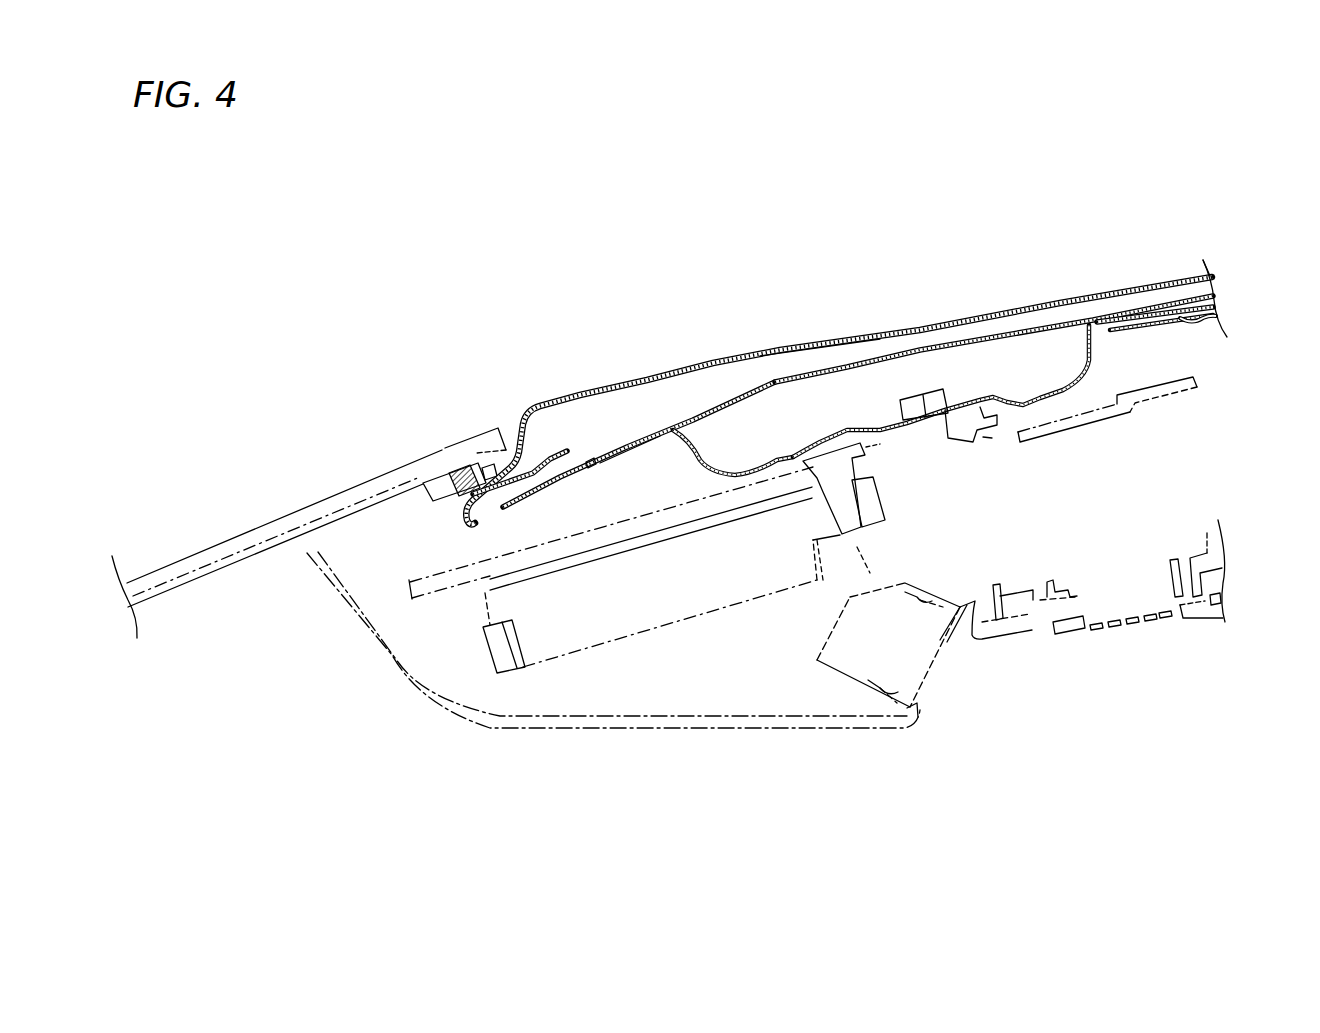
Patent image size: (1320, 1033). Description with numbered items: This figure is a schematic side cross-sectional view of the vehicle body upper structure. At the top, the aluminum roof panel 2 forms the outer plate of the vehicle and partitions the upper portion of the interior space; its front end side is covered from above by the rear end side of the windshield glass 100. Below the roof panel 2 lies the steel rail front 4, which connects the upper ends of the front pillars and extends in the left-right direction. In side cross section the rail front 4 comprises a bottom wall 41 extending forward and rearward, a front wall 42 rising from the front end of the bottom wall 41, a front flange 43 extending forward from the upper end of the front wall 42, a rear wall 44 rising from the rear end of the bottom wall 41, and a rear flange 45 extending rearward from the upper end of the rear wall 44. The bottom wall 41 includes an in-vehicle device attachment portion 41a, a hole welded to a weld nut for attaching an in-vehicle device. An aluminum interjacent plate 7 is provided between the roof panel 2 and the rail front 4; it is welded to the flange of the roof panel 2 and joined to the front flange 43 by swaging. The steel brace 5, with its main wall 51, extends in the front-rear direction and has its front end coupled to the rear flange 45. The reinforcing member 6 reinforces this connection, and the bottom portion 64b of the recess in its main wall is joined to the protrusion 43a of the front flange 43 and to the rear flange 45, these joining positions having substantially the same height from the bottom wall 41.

The windshield glass 100 is at (298, 508).
The roof panel 2 is at (920, 328).
The bottom portion 64b is at (838, 354).
The reinforcing member 6 is at (1058, 327).
The main wall 51 is at (1138, 295).
The brace 5 is at (1198, 277).
The rear flange 45 is at (1153, 325).
The rear wall 44 is at (1100, 357).
The rail front 4 is at (968, 570).
The bottom wall 41 is at (890, 443).
The in-vehicle device attachment portion 41a is at (937, 425).
The interjacent plate 7 is at (473, 497).
The front flange 43 is at (553, 490).
The protrusion 43a is at (624, 453).
The front wall 42 is at (688, 450).